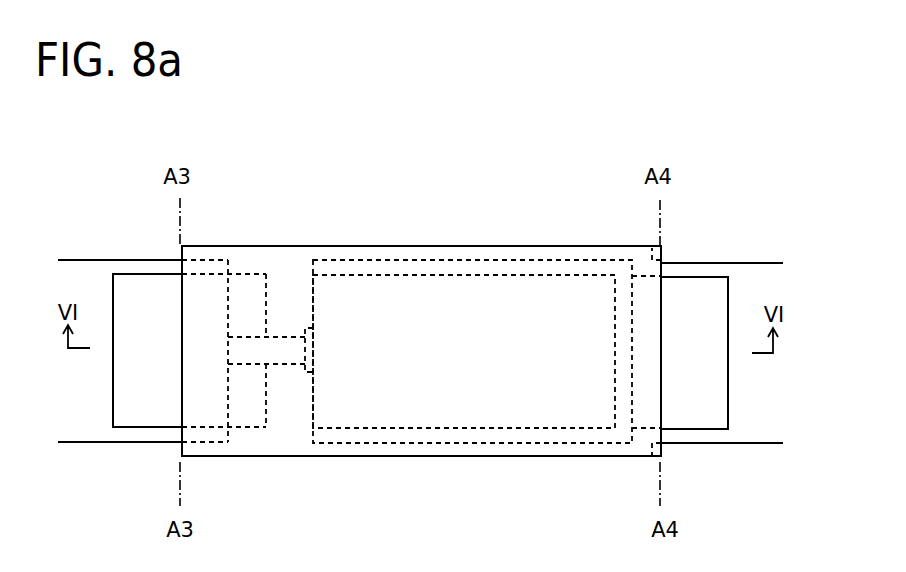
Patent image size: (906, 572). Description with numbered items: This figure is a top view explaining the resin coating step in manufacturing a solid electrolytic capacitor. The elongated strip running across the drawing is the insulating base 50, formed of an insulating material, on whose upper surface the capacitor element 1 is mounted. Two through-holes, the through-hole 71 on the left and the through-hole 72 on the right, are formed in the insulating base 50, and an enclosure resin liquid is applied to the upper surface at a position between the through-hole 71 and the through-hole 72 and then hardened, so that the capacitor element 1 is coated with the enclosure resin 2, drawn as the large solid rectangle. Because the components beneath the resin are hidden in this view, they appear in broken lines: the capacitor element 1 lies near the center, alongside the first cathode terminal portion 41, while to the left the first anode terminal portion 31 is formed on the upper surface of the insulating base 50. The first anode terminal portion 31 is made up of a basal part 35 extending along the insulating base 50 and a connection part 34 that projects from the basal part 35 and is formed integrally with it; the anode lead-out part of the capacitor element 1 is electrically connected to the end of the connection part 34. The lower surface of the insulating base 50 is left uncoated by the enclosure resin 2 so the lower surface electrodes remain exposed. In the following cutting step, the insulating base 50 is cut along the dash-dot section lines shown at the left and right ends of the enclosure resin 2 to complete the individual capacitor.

The capacitor element 1 is at (410, 274).
The enclosure resin 2 is at (557, 247).
The first anode terminal portion 31 is at (272, 275).
The connection part 34 is at (248, 300).
The basal part 35 is at (205, 297).
The first cathode terminal portion 41 is at (487, 260).
The insulating base 50 is at (97, 443).
The through-hole 71 is at (153, 287).
The through-hole 72 is at (703, 289).